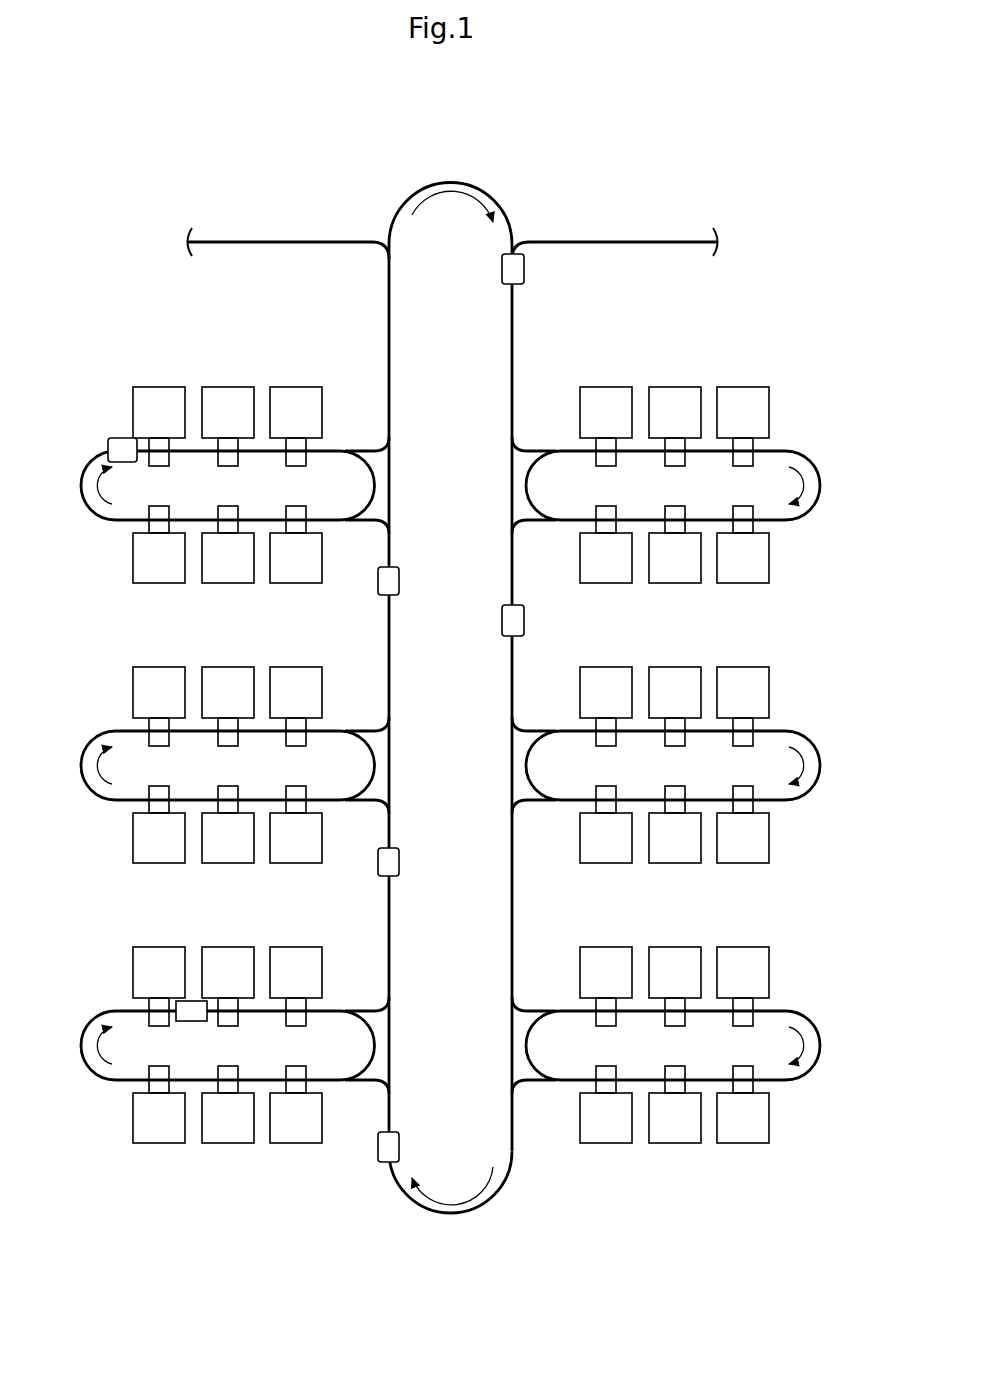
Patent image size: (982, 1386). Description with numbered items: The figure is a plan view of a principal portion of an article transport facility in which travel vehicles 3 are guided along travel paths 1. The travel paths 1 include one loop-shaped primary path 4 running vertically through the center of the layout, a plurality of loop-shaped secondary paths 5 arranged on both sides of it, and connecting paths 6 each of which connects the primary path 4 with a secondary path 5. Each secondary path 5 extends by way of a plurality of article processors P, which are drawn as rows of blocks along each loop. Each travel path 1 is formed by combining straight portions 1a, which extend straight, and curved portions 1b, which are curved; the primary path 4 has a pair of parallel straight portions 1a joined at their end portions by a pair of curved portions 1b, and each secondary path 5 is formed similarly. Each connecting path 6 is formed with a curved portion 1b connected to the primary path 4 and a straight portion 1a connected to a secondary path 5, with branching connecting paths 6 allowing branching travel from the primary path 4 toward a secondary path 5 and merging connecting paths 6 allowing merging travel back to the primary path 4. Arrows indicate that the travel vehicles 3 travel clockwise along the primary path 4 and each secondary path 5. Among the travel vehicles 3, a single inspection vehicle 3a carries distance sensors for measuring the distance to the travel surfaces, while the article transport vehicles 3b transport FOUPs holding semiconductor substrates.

The travel path 1 is at (466, 700).
The straight portion 1a is at (511, 580).
The curved portion 1b is at (465, 182).
The travel vehicle 3 is at (343, 708).
The inspection vehicle 3a is at (524, 269).
The article transport vehicle 3b is at (110, 440).
The primary path 4 is at (466, 700).
The secondary path 5 is at (787, 450).
The connecting path 6 is at (347, 1162).
The article processor P is at (228, 387).